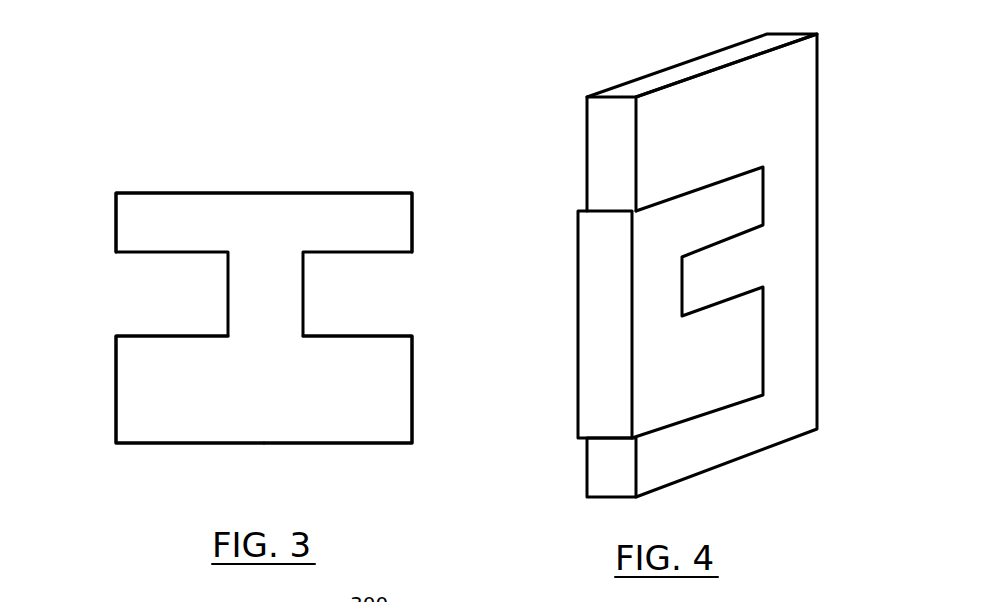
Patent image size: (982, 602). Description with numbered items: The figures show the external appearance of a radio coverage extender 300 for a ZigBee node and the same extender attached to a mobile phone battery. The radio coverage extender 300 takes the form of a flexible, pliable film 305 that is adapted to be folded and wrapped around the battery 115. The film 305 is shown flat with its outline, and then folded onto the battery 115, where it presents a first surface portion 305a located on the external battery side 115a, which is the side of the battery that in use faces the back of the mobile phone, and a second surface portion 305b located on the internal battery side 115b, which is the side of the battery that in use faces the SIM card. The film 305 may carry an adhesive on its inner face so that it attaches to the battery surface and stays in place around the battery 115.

In FIG. 4, the battery 115 is at (672, 265).
In FIG. 4, the external battery side 115a is at (757, 84).
In FIG. 4, the internal battery side 115b is at (587, 173).
In FIG. 3, the radio coverage extender 300 is at (150, 158).
In FIG. 4, the radio coverage extender 300 is at (578, 268).
In FIG. 3, the flexible, pliable film 305 is at (115, 252).
In FIG. 3, the first surface portion 305a is at (375, 393).
In FIG. 4, the first surface portion 305a is at (670, 413).
In FIG. 3, the second surface portion 305b is at (162, 420).